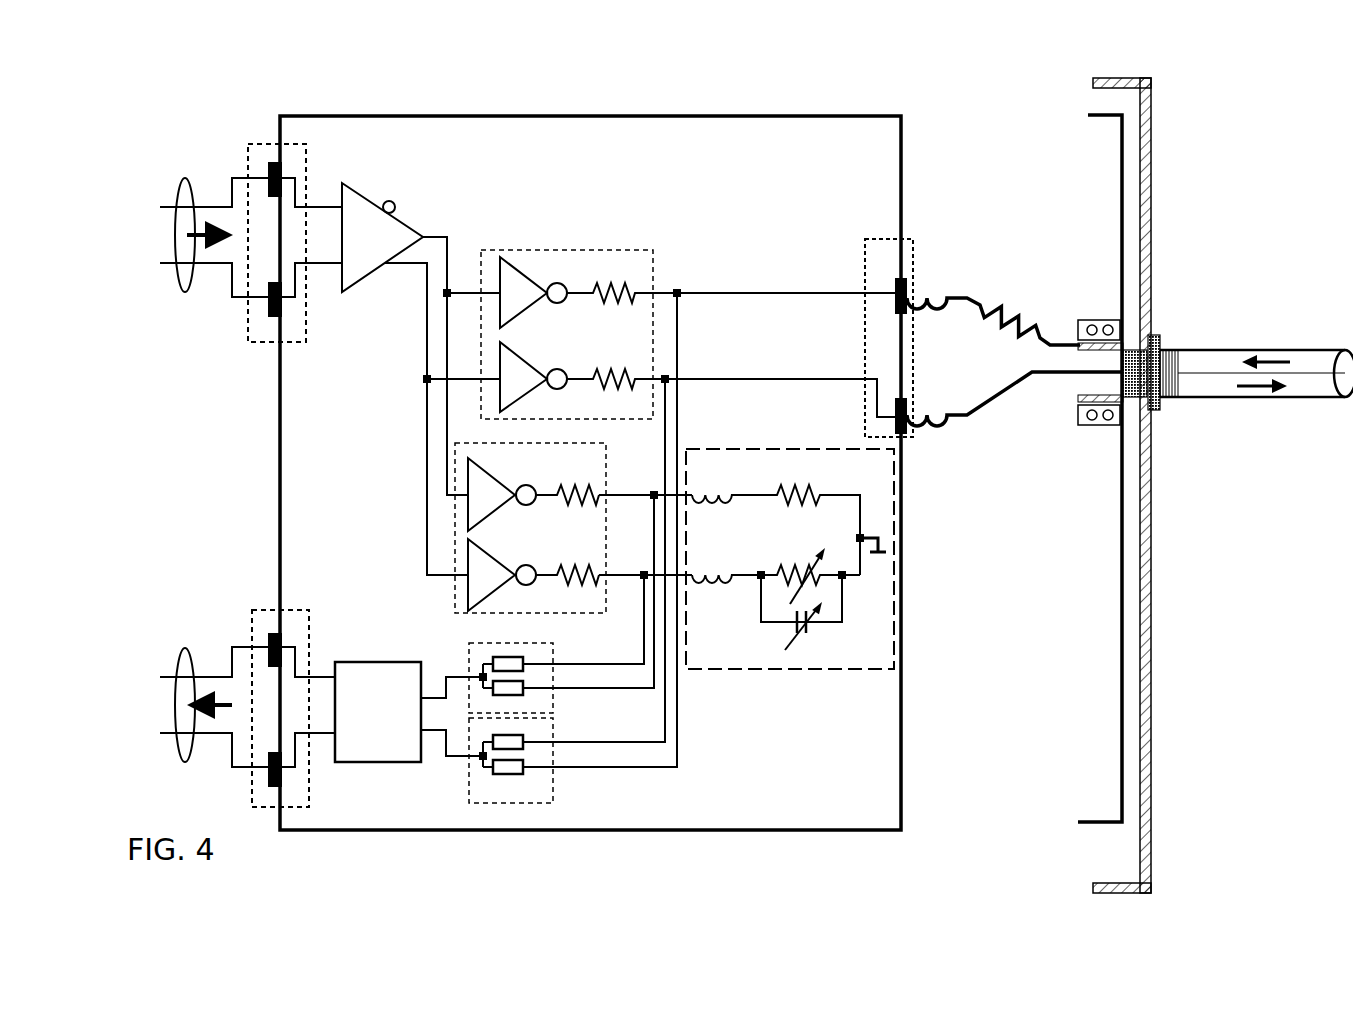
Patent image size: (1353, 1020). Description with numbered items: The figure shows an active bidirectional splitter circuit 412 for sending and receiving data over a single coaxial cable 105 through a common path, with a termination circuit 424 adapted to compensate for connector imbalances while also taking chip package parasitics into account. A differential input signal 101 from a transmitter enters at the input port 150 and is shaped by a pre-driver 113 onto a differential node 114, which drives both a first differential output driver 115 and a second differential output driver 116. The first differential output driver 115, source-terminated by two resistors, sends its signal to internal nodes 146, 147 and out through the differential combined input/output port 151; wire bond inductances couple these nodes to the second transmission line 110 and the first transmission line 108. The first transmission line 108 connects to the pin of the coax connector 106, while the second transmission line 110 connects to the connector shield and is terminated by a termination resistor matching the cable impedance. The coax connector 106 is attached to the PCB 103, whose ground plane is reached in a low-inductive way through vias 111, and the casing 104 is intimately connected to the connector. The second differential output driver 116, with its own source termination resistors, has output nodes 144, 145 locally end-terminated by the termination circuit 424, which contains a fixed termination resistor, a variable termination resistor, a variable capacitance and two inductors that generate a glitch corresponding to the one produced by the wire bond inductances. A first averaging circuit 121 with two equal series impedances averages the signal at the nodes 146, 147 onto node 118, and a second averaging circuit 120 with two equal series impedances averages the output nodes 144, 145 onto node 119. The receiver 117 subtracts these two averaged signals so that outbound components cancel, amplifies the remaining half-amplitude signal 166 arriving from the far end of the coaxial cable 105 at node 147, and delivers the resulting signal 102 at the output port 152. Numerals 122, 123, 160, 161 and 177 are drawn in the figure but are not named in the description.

The differential input signal 101 is at (193, 187).
The resulting signal 102 is at (193, 658).
The PCB 103 is at (1121, 184).
The casing 104 is at (1152, 186).
The coaxial cable 105 is at (1212, 362).
The coax connector 106 is at (1152, 418).
The first transmission line 108 is at (968, 418).
The second transmission line 110 is at (965, 305).
The vias 111 is at (1108, 318).
The pre-driver 113 is at (376, 200).
The differential node 114 is at (433, 318).
The first differential output driver 115 is at (585, 250).
The second differential output driver 116 is at (455, 590).
The receiver 117 is at (364, 763).
The node 118 is at (450, 757).
The node 119 is at (456, 676).
The second averaging circuit 120 is at (530, 643).
The first averaging circuit 121 is at (540, 718).
The first network connection lines 122 is at (577, 688).
The second network connection lines 123 is at (600, 765).
The output node 144 is at (640, 494).
The output node 145 is at (640, 573).
The node 146 is at (716, 293).
The node 147 is at (718, 379).
The input port 150 is at (249, 326).
The differential combined input/output port 151 is at (916, 248).
The output port 152 is at (309, 622).
The coupling capacitor 160 is at (912, 281).
The coupling capacitor 161 is at (906, 440).
The signal 166 is at (1282, 354).
The transmitted signal direction 177 is at (1258, 400).
The active splitter circuit 412 is at (903, 724).
The termination circuit 424 is at (773, 670).